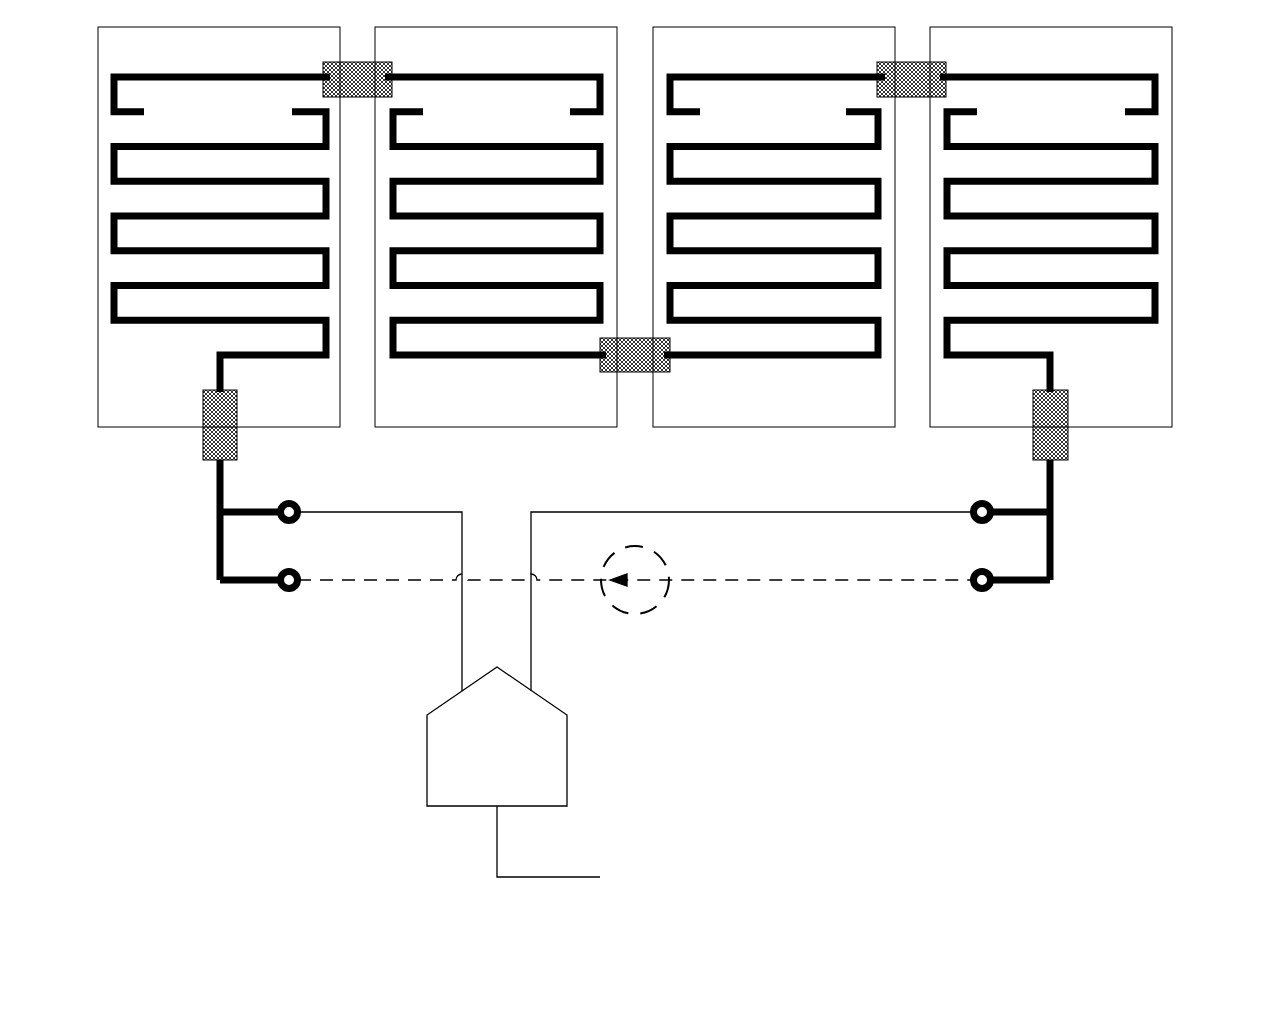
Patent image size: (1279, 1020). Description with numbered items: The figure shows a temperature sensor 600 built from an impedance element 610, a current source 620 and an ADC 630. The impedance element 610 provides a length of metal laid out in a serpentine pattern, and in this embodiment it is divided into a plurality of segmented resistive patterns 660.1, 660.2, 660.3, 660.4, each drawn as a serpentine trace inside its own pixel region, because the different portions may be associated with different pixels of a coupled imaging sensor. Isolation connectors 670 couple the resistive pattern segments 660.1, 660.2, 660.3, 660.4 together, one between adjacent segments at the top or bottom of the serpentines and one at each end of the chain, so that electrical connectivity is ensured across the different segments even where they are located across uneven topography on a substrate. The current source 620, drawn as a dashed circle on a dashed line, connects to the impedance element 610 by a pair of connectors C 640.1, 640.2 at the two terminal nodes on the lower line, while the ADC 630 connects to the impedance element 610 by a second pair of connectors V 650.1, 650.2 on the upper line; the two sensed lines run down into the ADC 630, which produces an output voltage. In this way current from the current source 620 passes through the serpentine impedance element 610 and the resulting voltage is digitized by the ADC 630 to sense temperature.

The temperature sensor 600 is at (664, 458).
The impedance element 610 is at (1128, 70).
The current source 620 is at (633, 614).
The ADC 630 is at (513, 772).
The connector C 640.1 is at (283, 594).
The connector C 640.2 is at (988, 594).
The connector V 650.1 is at (283, 500).
The connector V 650.2 is at (988, 498).
The segmented resistive pattern 660.1 is at (222, 234).
The segmented resistive pattern 660.2 is at (495, 216).
The segmented resistive pattern 660.3 is at (774, 216).
The segmented resistive pattern 660.4 is at (1047, 234).
The isolation connector 670 is at (357, 99).